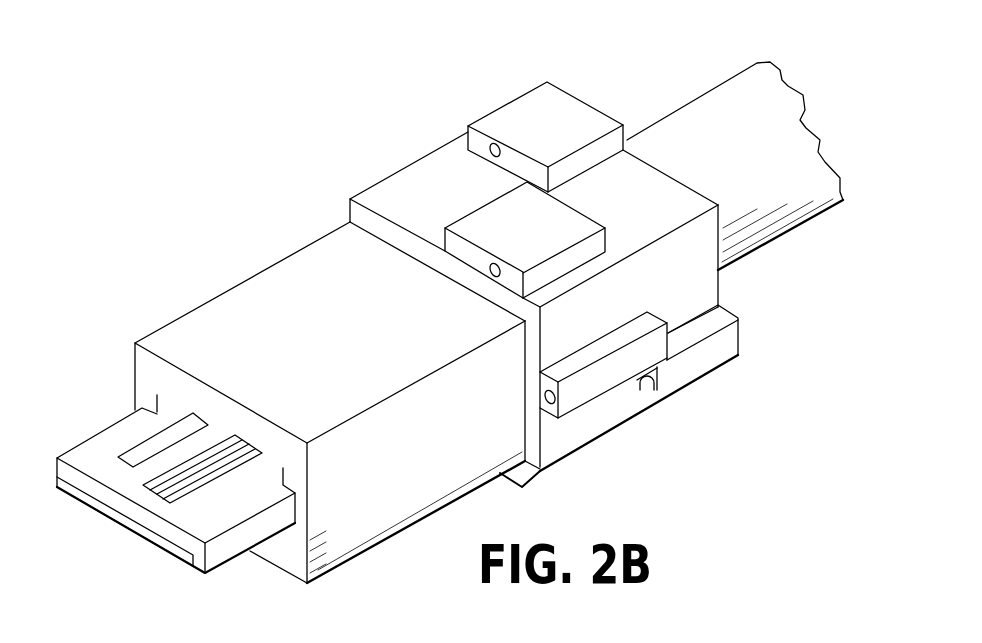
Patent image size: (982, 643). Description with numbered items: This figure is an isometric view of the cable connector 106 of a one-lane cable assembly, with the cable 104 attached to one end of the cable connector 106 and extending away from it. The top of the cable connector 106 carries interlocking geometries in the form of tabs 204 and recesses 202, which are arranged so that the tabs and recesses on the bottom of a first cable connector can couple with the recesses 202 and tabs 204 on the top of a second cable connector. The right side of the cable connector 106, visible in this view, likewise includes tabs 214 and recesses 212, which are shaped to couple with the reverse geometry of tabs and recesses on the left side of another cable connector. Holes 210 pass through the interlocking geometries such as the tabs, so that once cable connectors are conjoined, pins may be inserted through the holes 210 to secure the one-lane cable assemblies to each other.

The cable 104 is at (687, 100).
The cable connector 106 is at (248, 278).
The recesses 202 is at (460, 202).
The tabs 204 is at (563, 134).
The holes 210 is at (492, 277).
The recesses 212 is at (700, 294).
The tabs 214 is at (700, 360).